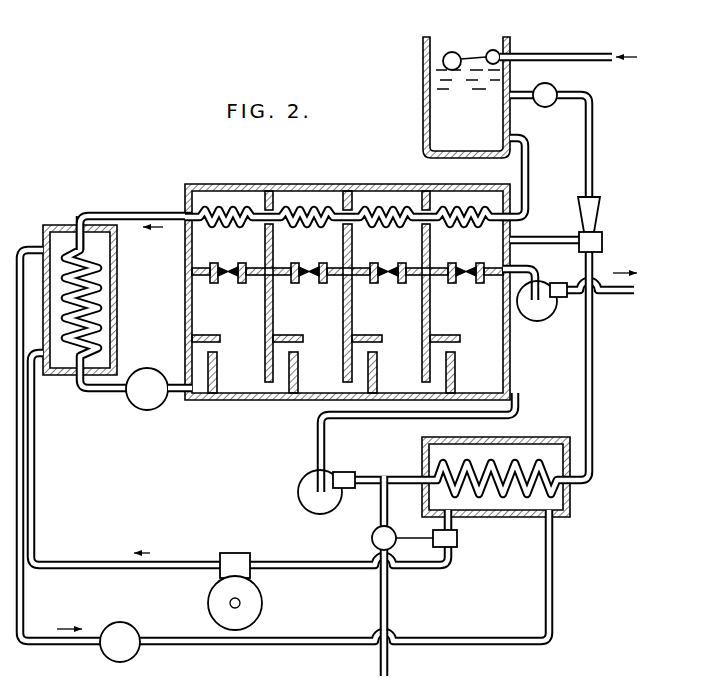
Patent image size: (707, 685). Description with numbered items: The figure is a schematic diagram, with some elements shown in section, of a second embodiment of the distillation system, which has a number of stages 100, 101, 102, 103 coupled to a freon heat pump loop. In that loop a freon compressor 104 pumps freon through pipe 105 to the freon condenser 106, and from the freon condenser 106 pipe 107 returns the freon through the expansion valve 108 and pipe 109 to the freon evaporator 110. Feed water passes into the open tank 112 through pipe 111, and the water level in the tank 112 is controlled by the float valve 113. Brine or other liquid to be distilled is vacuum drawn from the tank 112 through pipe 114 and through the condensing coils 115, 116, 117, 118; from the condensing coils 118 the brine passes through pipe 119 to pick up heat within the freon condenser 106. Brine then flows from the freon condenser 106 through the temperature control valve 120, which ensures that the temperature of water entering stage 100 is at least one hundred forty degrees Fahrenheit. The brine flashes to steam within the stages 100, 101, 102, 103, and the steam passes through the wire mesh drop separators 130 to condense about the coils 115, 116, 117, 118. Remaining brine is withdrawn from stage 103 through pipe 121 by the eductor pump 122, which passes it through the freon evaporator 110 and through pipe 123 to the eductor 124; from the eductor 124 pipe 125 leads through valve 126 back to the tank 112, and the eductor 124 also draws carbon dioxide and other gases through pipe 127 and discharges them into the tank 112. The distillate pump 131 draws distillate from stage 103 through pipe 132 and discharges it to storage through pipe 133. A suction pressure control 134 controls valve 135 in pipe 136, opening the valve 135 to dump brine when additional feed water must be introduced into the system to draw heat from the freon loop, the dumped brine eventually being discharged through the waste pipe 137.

The stage 100 is at (347, 292).
The stage 101 is at (312, 292).
The stage 102 is at (391, 292).
The stage 103 is at (466, 330).
The freon compressor 104 is at (262, 603).
The pipe 105 is at (32, 511).
The freon condenser 106 is at (68, 224).
The pipe 107 is at (23, 617).
The expansion valve 108 is at (127, 625).
The pipe 109 is at (458, 638).
The freon evaporator 110 is at (537, 434).
The pipe 111 is at (558, 53).
The open tank 112 is at (443, 122).
The float valve 113 is at (492, 50).
The pipe 114 is at (528, 186).
The condensing coil 115 is at (466, 211).
The condensing coil 116 is at (388, 211).
The condensing coil 117 is at (310, 211).
The condensing coil 118 is at (228, 211).
The pipe 119 is at (142, 212).
The temperature control valve 120 is at (157, 410).
The pipe 121 is at (317, 444).
The eductor pump 122 is at (299, 492).
The pipe 123 is at (607, 366).
The eductor 124 is at (595, 240).
The pipe 125 is at (594, 166).
The valve 126 is at (543, 107).
The pipe 127 is at (545, 238).
The wire mesh drop separator 130 is at (226, 268).
The distillate pump 131 is at (535, 313).
The pipe 132 is at (536, 271).
The pipe 133 is at (618, 296).
The suction pressure control 134 is at (458, 545).
The valve 135 is at (372, 538).
The pipe 136 is at (380, 493).
The waste pipe 137 is at (382, 632).